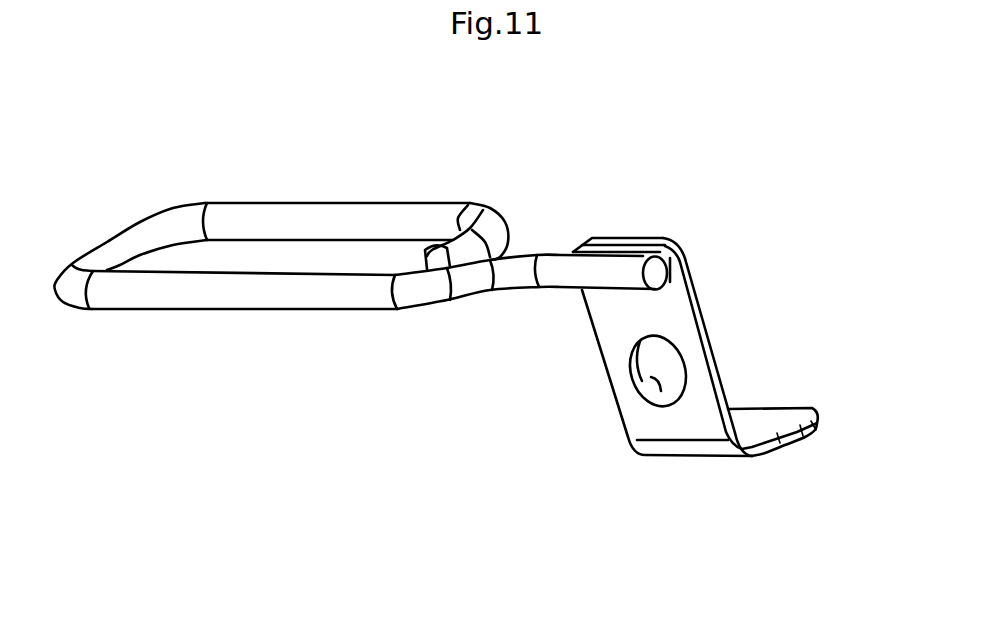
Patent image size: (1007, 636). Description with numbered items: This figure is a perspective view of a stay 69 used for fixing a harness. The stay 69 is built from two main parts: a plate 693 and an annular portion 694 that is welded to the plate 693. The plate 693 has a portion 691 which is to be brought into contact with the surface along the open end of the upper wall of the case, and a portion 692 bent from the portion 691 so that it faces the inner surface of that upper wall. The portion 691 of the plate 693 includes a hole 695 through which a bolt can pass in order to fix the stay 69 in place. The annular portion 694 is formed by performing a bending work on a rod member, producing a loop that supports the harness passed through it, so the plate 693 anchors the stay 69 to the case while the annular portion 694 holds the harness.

The stay 69 is at (706, 257).
The portion to be brought into contact with the surface along the open end of the up 691 is at (677, 330).
The portion bent from the portion 691 692 is at (758, 425).
The plate 693 is at (853, 297).
The annular portion 694 is at (297, 220).
The hole 695 is at (642, 395).